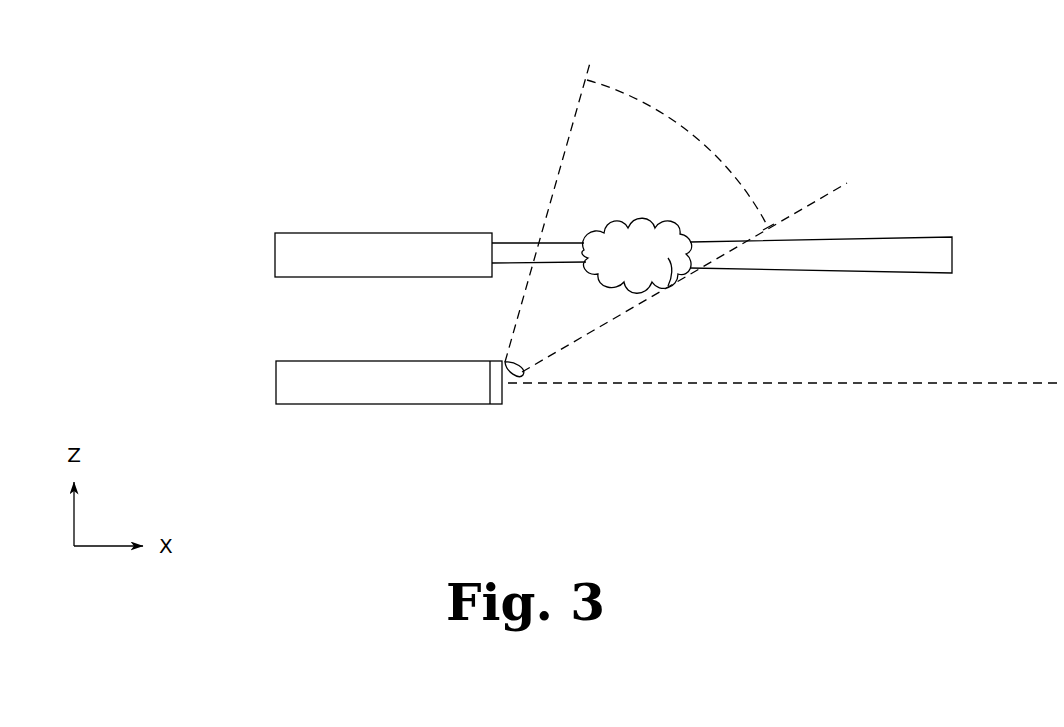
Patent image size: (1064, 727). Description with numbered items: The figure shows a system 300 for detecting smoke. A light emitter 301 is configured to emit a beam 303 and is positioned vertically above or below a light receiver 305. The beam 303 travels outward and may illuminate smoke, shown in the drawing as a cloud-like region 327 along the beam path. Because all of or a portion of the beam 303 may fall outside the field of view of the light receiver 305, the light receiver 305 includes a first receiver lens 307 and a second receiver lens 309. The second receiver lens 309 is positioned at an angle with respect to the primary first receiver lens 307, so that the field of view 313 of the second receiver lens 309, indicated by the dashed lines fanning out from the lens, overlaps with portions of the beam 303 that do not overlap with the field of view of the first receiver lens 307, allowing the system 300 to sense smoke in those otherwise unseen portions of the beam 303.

The system 300 is at (224, 115).
The light emitter 301 is at (270, 255).
The beam 303 is at (926, 233).
The light receiver 305 is at (270, 383).
The first receiver lens 307 is at (492, 414).
The second receiver lens 309 is at (497, 355).
The field of view 313 is at (716, 212).
The particle cloud 327 is at (604, 214).